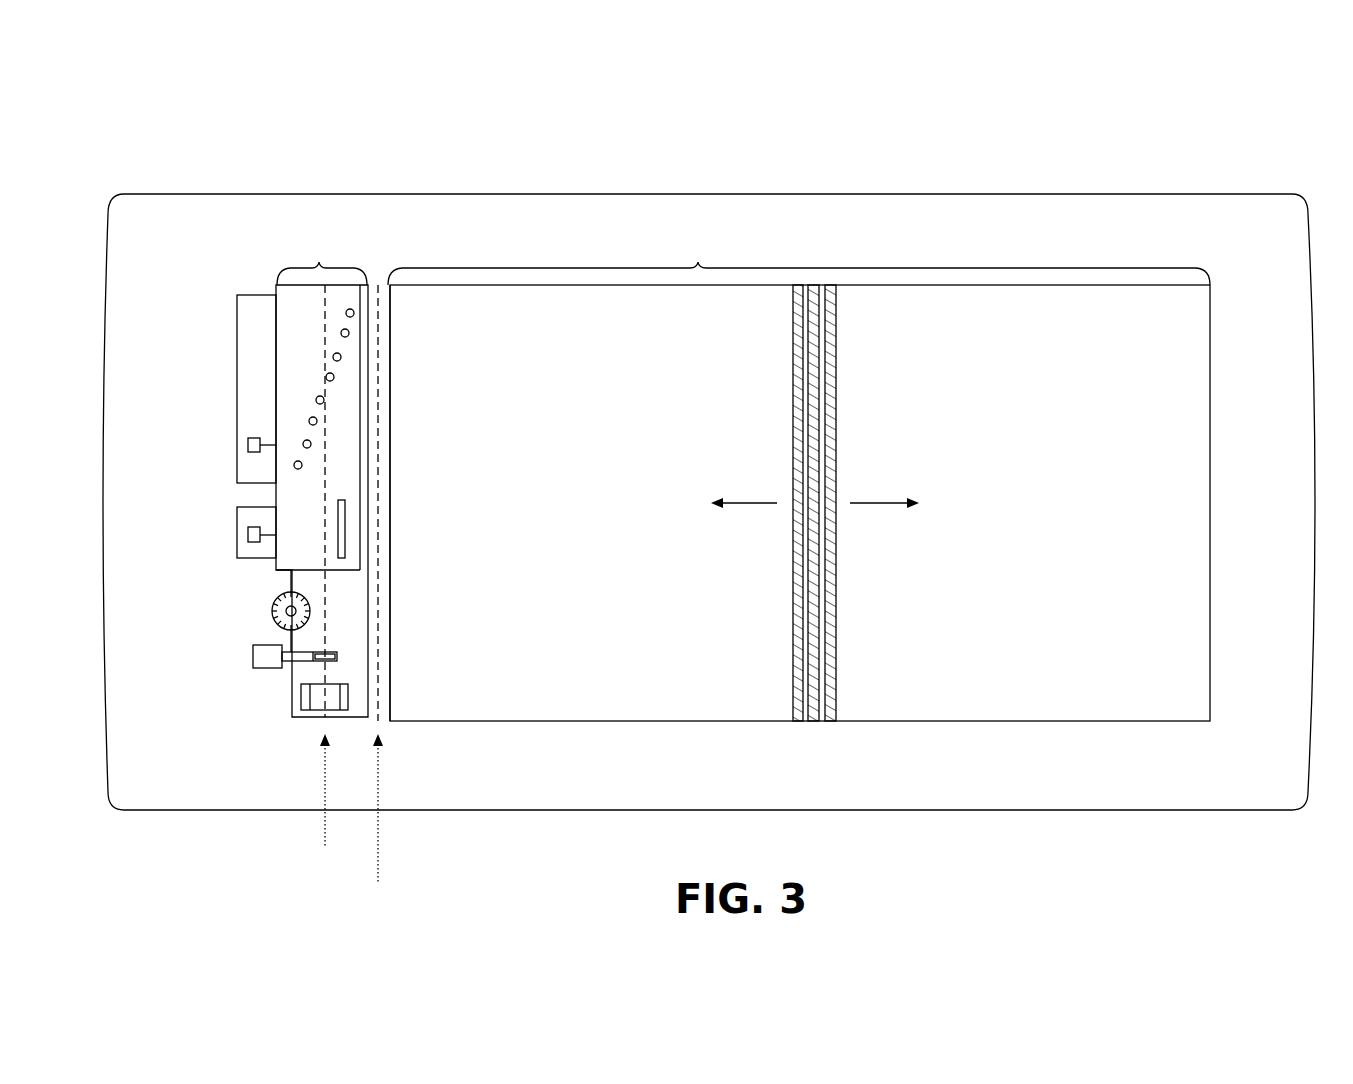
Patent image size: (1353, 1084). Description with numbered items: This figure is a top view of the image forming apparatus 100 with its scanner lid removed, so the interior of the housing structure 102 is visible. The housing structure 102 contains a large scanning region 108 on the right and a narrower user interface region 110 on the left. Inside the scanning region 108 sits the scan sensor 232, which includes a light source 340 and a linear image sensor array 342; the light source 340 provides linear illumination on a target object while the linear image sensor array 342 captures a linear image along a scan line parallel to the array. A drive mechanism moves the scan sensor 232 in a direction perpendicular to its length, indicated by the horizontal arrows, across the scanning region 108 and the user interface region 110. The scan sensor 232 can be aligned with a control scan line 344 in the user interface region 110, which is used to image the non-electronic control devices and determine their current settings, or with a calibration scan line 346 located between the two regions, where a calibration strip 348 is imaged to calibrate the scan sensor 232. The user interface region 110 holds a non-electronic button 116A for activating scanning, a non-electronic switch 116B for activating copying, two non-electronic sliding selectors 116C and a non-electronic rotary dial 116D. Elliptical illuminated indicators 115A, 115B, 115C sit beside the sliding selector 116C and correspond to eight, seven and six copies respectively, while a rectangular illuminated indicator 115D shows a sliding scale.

The image forming apparatus 100 is at (1214, 103).
The housing structure 102 is at (891, 193).
The scanning region 108 is at (799, 476).
The user interface region 110 is at (322, 475).
The illuminated indicator 115A is at (346, 312).
The illuminated indicator 115B is at (341, 332).
The illuminated indicator 115C is at (333, 357).
The illuminated indicator 115D is at (345, 527).
The non-electronic button 116A is at (253, 654).
The non-electronic switch 116B is at (301, 695).
The non-electronic sliding selector 116C is at (237, 384).
The non-electronic rotary dial 116D is at (272, 606).
The scan sensor 232 is at (831, 503).
The light source 340 is at (822, 586).
The linear image sensor array 342 is at (805, 630).
The control scan line 344 is at (328, 587).
The calibration scan line 346 is at (385, 605).
The calibration strip 348 is at (384, 588).